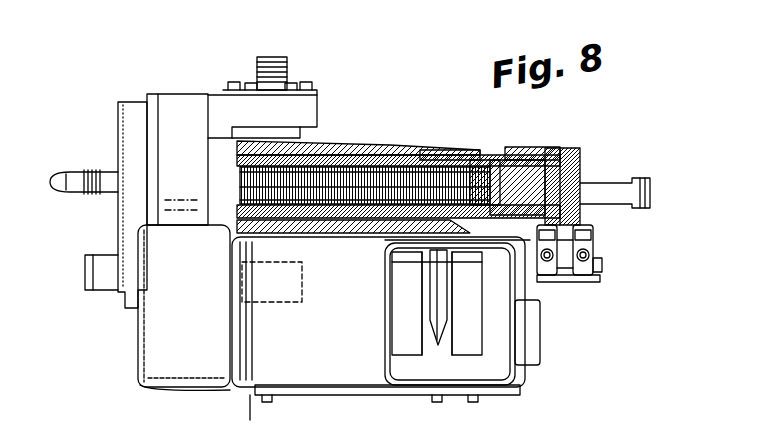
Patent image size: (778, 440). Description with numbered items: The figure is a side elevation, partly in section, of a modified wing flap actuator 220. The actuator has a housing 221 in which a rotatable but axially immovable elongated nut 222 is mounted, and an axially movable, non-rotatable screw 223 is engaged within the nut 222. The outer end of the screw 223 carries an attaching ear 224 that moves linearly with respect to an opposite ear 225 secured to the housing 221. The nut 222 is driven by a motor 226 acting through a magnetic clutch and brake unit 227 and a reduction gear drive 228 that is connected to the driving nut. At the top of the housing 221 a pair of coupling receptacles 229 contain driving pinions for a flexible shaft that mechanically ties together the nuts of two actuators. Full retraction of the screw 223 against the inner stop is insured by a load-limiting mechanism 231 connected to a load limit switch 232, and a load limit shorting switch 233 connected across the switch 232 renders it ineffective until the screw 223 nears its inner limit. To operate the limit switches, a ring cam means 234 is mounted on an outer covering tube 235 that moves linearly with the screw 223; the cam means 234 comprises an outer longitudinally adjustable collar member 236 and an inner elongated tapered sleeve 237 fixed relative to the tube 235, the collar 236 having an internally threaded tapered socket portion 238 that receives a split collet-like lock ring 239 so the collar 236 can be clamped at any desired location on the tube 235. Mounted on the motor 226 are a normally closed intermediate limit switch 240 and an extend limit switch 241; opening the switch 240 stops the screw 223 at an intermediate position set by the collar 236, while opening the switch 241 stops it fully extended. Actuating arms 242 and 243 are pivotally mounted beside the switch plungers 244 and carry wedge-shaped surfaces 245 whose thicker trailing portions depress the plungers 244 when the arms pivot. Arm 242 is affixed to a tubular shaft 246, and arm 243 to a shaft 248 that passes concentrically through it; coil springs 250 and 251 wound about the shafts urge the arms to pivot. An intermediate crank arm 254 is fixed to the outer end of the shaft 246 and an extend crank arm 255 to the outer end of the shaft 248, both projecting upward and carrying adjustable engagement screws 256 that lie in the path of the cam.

The actuator 220 is at (152, 92).
The housing 221 is at (192, 95).
The elongated nut 222 is at (463, 157).
The screw 223 is at (527, 152).
The attaching ear 224 is at (630, 195).
The opposite ear 225 is at (70, 172).
The motor 226 is at (340, 375).
The magnetic clutch and brake unit 227 is at (208, 386).
The reduction gear drive 228 is at (165, 132).
The coupling receptacles 229 is at (293, 65).
The load-limiting mechanism 231 is at (110, 290).
The load limit switch 232 is at (229, 295).
The load limit shorting switch 233 is at (303, 290).
The ring cam means 234 is at (325, 141).
The outer covering tube 235 is at (473, 160).
The collar member 236 is at (403, 148).
The tapered sleeve 237 is at (360, 153).
The tapered socket portion 238 is at (430, 150).
The lock ring 239 is at (428, 156).
The intermediate limit switch 240 is at (410, 380).
The extend limit switch 241 is at (475, 345).
The actuating arm 242 is at (425, 300).
The actuating arm 243 is at (455, 253).
The switch plungers 244 is at (420, 283).
The wedge-shaped surfaces 245 is at (438, 309).
The tubular shaft 246 is at (548, 273).
The shaft 248 is at (603, 265).
The coil spring 250 is at (430, 262).
The coil spring 251 is at (400, 240).
The intermediate crank arm 254 is at (595, 276).
The extend crank arm 255 is at (590, 258).
The adjustable engagement screws 256 is at (578, 244).